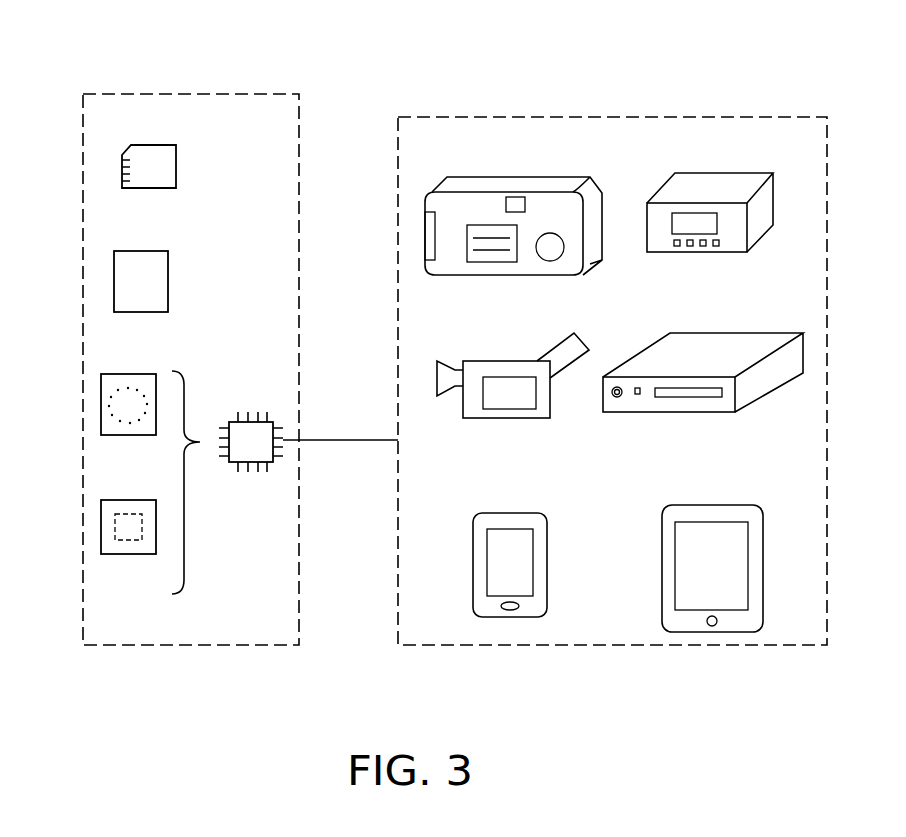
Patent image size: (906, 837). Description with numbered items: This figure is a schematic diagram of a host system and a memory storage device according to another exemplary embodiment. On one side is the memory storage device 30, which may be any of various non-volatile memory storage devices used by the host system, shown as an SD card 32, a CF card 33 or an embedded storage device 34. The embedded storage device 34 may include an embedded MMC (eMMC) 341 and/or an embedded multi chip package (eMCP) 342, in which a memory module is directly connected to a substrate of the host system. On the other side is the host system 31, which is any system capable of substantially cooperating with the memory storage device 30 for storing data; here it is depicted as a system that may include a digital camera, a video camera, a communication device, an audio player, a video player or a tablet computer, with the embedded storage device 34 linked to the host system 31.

The memory storage device 30 is at (183, 93).
The host system 31 is at (545, 115).
The SD card 32 is at (121, 172).
The CF card 33 is at (114, 282).
The embedded storage device 34 is at (252, 412).
The embedded MMC (eMMC) 341 is at (101, 405).
The embedded multi chip package (eMCP) 342 is at (101, 528).